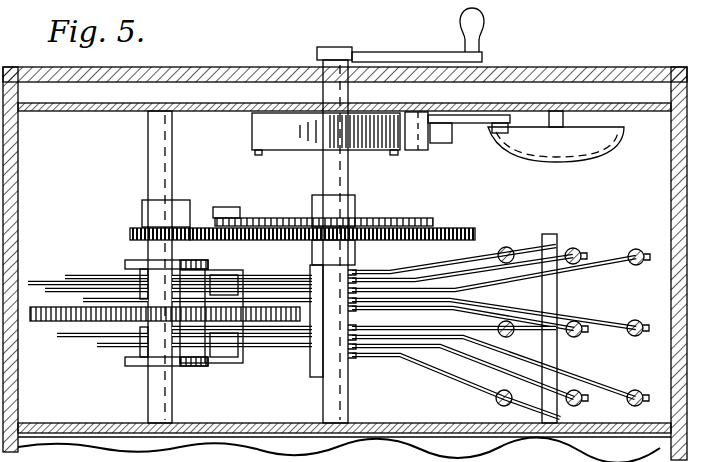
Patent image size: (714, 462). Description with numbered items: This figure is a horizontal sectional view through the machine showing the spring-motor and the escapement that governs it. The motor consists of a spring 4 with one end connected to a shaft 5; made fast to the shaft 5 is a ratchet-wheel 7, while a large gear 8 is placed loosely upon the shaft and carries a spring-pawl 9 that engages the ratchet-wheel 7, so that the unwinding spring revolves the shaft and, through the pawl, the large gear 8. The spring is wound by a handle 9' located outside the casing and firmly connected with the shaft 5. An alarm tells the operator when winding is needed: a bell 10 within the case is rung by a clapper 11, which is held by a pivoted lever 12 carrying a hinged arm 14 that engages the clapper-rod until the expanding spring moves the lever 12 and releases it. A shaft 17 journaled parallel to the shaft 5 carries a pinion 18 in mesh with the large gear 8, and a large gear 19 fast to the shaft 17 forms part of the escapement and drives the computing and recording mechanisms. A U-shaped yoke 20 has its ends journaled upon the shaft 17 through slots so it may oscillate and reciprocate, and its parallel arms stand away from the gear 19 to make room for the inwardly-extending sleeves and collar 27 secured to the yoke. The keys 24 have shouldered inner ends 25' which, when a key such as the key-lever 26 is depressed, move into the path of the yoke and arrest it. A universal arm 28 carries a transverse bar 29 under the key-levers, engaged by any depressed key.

The spring 4 is at (294, 140).
The shaft 5 is at (345, 178).
The ratchet-wheel 7 is at (398, 222).
The large gear 8 is at (473, 236).
The spring-pawl 9 is at (226, 198).
The handle 9' is at (418, 35).
The bell 10 is at (556, 136).
The clapper 11 is at (497, 131).
The pivoted lever 12 is at (411, 150).
The pivoted arm 14 is at (441, 128).
The shaft 17 is at (150, 173).
The pinion 18 is at (130, 235).
The large gear 19 is at (58, 313).
The yoke 20 is at (228, 288).
The keys 24 is at (635, 338).
The shoulders 25' is at (88, 296).
The key-lever 26 is at (380, 278).
The sleeves and collar 27 is at (190, 275).
The universal arm 28 is at (452, 313).
The universal transverse bar 29 is at (554, 297).